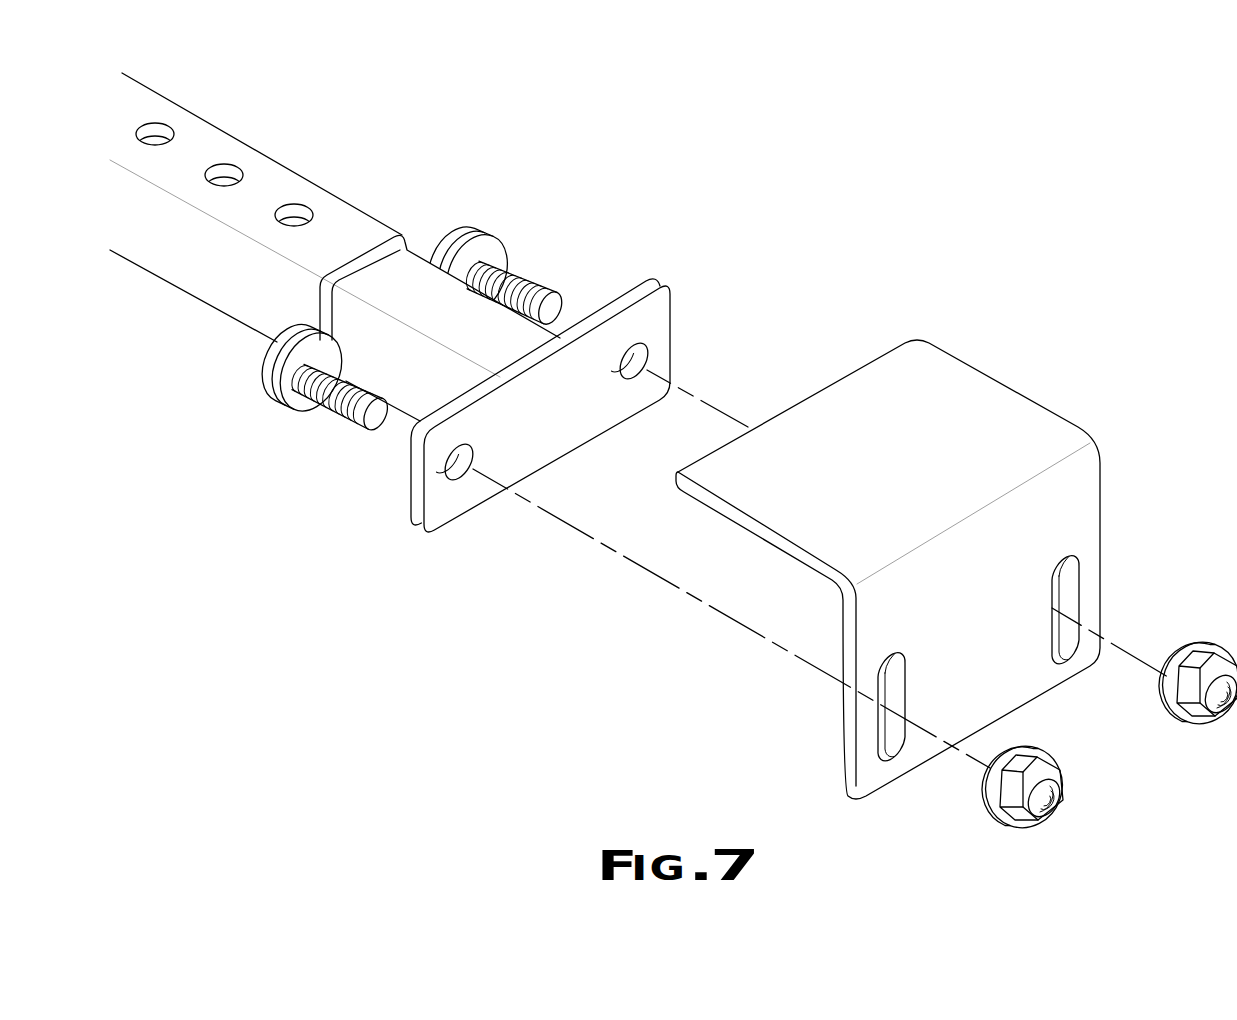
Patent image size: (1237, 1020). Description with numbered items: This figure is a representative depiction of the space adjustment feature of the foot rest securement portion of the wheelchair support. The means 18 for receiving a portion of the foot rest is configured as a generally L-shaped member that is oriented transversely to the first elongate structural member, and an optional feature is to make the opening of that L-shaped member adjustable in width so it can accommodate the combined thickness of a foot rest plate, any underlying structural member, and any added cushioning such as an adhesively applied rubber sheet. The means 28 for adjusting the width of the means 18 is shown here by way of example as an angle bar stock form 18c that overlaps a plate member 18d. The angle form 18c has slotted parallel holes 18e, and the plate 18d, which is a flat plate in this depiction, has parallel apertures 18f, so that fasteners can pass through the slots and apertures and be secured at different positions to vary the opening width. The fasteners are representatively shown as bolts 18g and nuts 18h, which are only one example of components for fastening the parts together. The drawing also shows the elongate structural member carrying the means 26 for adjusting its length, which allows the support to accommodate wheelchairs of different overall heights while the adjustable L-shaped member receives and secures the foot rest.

The means for receiving the portion of the foot rest 18 is at (737, 505).
The angle bar stock form 18c is at (1025, 633).
The plate member 18d is at (596, 441).
The slotted parallel holes 18e is at (1060, 582).
The parallel apertures 18f is at (462, 476).
The bolts 18g is at (292, 403).
The nuts 18h is at (1043, 750).
The means for adjusting a length of the member 26 is at (437, 172).
The means for adjusting a width of the means for securing the foot rest 28 is at (956, 589).